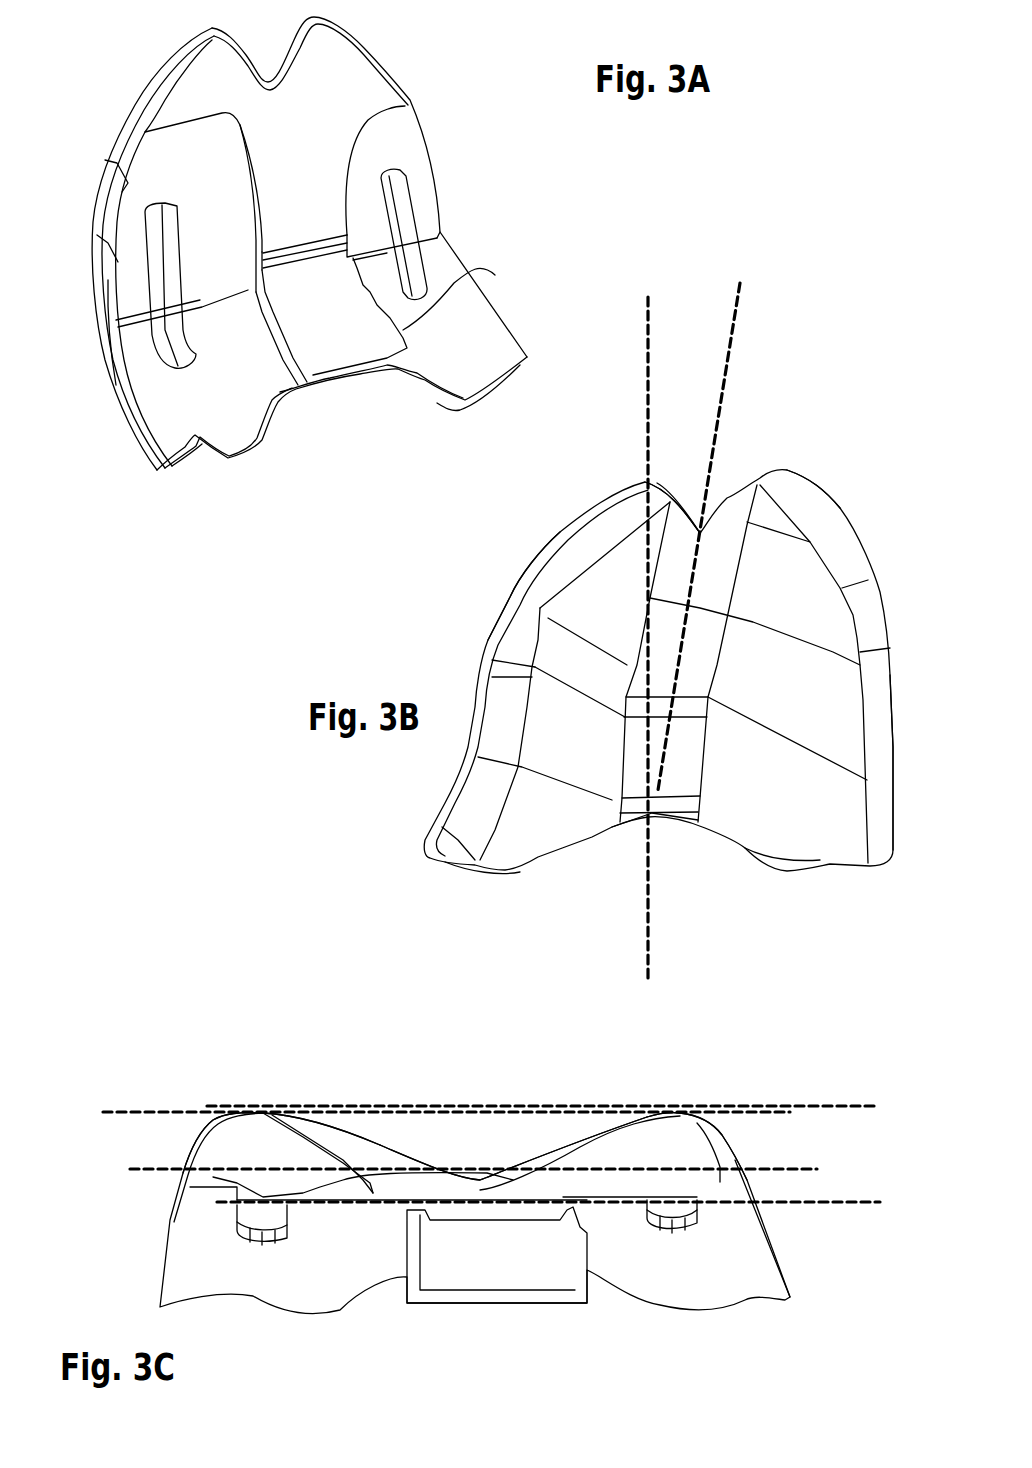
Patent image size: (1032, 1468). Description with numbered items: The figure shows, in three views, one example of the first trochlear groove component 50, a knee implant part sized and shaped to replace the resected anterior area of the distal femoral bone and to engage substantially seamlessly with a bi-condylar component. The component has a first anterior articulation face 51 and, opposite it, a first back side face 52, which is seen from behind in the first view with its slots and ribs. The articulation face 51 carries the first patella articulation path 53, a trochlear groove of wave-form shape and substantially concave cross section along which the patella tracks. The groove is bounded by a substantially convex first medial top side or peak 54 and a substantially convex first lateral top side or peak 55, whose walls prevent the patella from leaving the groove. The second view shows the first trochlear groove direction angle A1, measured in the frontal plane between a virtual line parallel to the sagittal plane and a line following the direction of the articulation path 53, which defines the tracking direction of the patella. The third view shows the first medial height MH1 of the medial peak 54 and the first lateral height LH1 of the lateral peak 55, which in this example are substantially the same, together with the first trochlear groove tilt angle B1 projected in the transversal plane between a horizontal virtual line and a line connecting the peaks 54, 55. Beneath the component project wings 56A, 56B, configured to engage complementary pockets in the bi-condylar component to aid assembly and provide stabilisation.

In FIG. 3A, the first trochlear groove component 50 is at (363, 63).
In FIG. 3B, the first trochlear groove component 50 is at (500, 807).
In FIG. 3C, the first trochlear groove component 50 is at (210, 1133).
In FIG. 3B, the first anterior articulation face 51 is at (820, 825).
In FIG. 3A, the first back side face 52 is at (433, 352).
In FIG. 3B, the first patella articulation path 53 is at (690, 768).
In FIG. 3C, the first patella articulation path 53 is at (445, 1180).
In FIG. 3B, the first medial top side or peak 54 is at (585, 662).
In FIG. 3C, the first medial top side or peak 54 is at (258, 1125).
In FIG. 3B, the first lateral top side or peak 55 is at (785, 668).
In FIG. 3C, the first lateral top side or peak 55 is at (650, 1125).
In FIG. 3C, the wing 56A is at (260, 1232).
In FIG. 3C, the wing 56B is at (683, 1215).
In FIG. 3B, the first trochlear groove direction angle A1 is at (725, 412).
In FIG. 3C, the first medial height MH1 is at (133, 1110).
In FIG. 3C, the first lateral height LH1 is at (777, 1110).
In FIG. 3C, the first trochlear groove tilt angle B1 is at (868, 1104).